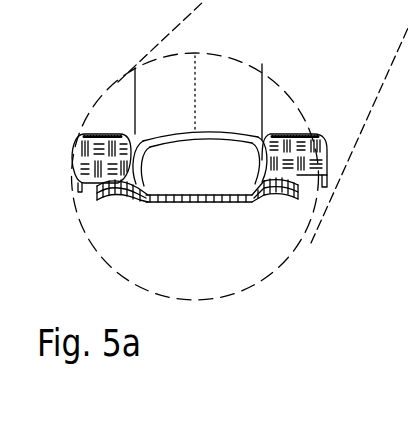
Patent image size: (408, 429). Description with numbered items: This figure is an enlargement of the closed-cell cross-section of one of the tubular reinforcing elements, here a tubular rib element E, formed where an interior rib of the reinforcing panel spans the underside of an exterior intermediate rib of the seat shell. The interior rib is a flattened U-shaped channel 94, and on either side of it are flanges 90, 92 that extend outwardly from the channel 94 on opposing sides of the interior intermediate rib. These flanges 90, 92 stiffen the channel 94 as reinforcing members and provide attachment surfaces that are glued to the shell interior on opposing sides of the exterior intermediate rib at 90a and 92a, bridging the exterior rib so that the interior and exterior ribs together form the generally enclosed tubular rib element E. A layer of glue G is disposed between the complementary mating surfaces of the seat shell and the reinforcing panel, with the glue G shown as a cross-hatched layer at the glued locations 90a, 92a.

The flange 90 is at (113, 197).
The flange 92 is at (276, 196).
The glued location 90a is at (158, 137).
The glued location 92a is at (274, 190).
The flattened U-shaped channel 94 is at (200, 194).
The lateral tubular rib element E is at (201, 181).
The glue G is at (100, 197).